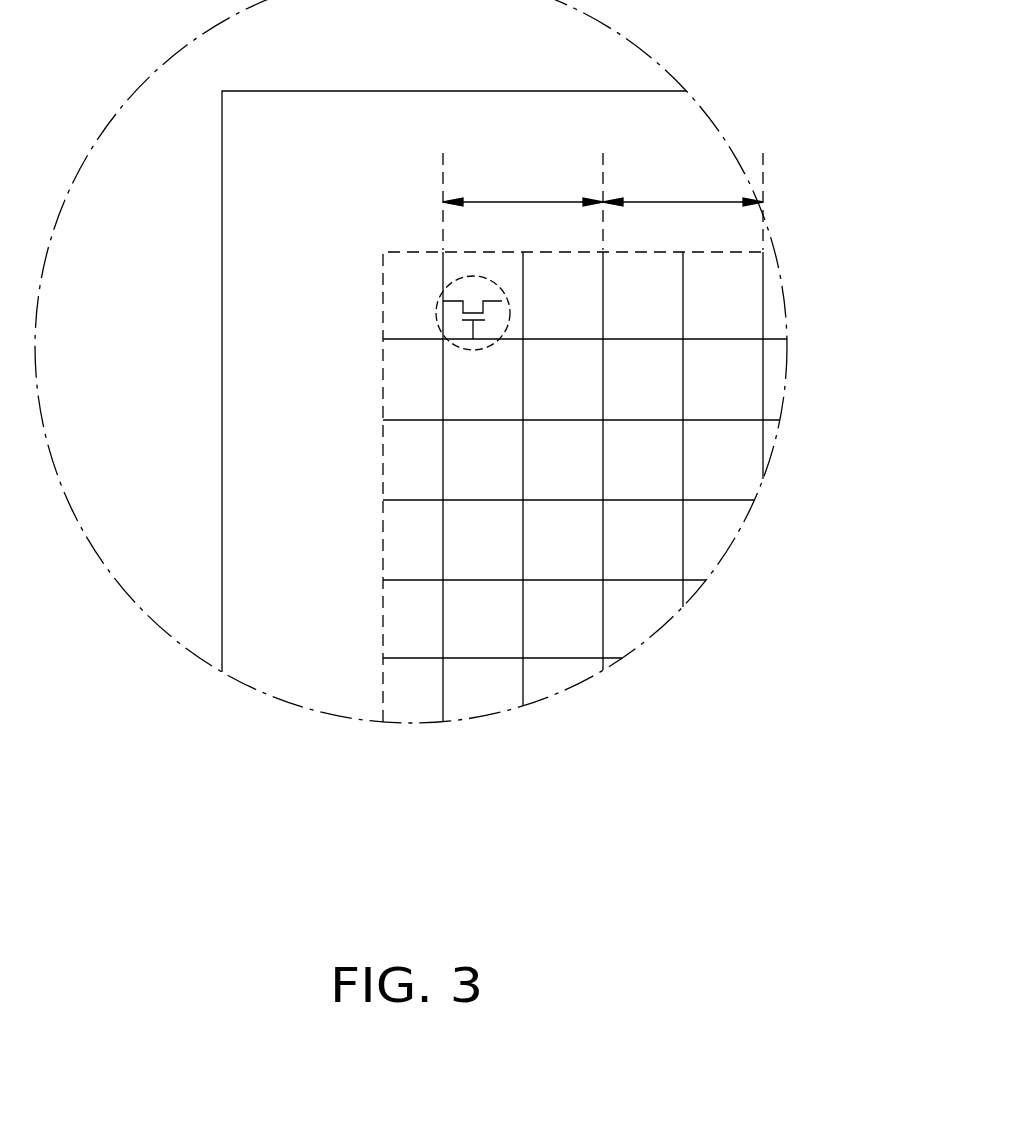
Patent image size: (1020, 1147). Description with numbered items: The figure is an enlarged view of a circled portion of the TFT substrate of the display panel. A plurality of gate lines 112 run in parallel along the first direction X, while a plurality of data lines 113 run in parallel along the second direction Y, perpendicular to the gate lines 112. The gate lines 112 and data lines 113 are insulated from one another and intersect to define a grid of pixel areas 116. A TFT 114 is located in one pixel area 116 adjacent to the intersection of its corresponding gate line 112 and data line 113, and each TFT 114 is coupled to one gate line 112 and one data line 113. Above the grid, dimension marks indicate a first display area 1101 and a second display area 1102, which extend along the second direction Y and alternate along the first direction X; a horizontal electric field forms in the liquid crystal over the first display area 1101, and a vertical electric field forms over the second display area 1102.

The gate line 112 is at (772, 339).
The data line 113 is at (764, 295).
The TFT 114 is at (448, 285).
The pixel area 116 is at (472, 262).
The first display area 1101 is at (523, 189).
The second display area 1102 is at (683, 189).